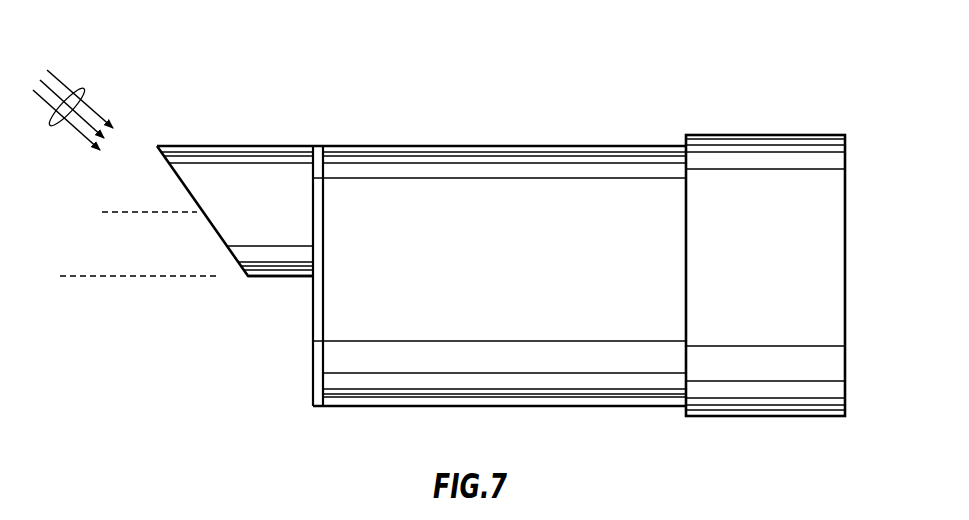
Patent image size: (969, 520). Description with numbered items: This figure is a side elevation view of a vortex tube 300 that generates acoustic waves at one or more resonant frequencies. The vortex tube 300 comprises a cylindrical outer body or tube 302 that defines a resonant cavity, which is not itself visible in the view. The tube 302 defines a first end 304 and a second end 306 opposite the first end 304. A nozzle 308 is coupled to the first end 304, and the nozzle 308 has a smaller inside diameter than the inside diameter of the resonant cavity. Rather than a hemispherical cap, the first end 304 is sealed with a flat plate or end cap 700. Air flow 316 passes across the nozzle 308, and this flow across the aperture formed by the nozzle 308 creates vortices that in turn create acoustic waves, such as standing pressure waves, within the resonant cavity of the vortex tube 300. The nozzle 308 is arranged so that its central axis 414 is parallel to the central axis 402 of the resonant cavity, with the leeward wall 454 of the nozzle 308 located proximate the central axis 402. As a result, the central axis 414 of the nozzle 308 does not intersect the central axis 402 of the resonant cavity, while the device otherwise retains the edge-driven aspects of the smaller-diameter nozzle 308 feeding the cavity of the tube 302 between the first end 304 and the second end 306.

The vortex tube 300 is at (710, 97).
The cylindrical outer body or tube 302 is at (578, 145).
The first end 304 is at (320, 407).
The second end 306 is at (683, 408).
The nozzle 308 is at (230, 147).
The air flow 316 is at (72, 92).
The central axis of the resonant cavity 402 is at (120, 277).
The central axis of the nozzle 414 is at (117, 210).
The leeward wall 454 is at (277, 278).
The flat plate or end cap 700 is at (318, 143).